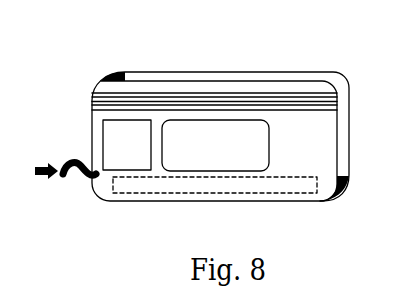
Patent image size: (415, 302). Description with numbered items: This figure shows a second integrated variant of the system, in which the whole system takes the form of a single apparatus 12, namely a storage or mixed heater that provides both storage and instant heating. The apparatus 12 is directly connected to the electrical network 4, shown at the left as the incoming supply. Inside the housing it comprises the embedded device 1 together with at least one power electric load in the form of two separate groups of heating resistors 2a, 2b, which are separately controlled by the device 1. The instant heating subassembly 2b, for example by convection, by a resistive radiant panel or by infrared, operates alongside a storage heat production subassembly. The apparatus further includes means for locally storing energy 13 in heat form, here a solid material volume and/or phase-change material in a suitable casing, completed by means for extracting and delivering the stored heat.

The device 1 is at (123, 146).
The apparatus 12 is at (125, 71).
The means for locally storing energy 13 is at (207, 163).
The group of heating resistors 2a is at (280, 182).
The instant heating subassembly 2b is at (291, 150).
The electrical network 4 is at (43, 168).